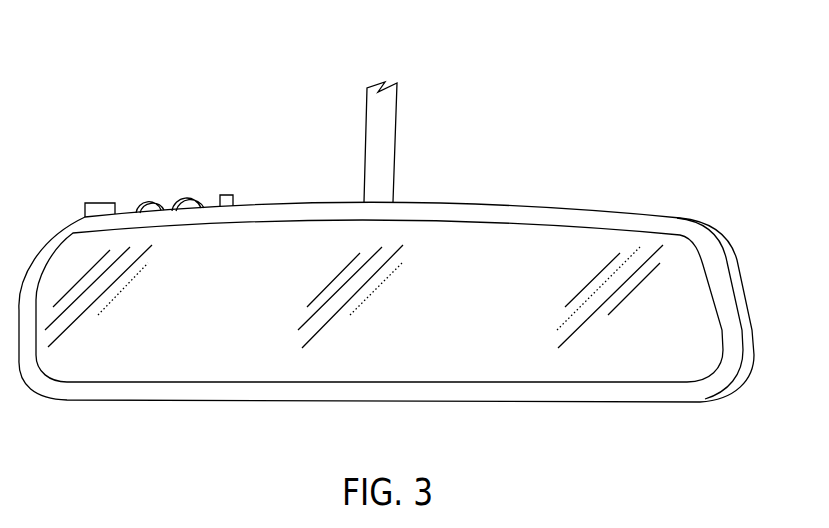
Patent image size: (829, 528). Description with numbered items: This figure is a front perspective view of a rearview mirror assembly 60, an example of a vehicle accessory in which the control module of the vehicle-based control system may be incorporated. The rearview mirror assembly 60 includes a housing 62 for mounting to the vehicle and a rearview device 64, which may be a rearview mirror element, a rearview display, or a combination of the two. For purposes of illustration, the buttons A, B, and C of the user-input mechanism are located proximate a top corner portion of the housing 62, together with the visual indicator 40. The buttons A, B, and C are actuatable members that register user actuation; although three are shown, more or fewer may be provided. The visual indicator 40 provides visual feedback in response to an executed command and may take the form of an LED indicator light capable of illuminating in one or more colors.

The button A is at (98, 208).
The button B is at (147, 200).
The button C is at (183, 197).
The visual indicator 40 is at (227, 195).
The rearview mirror assembly 60 is at (432, 69).
The housing 62 is at (628, 210).
The rearview device 64 is at (693, 315).